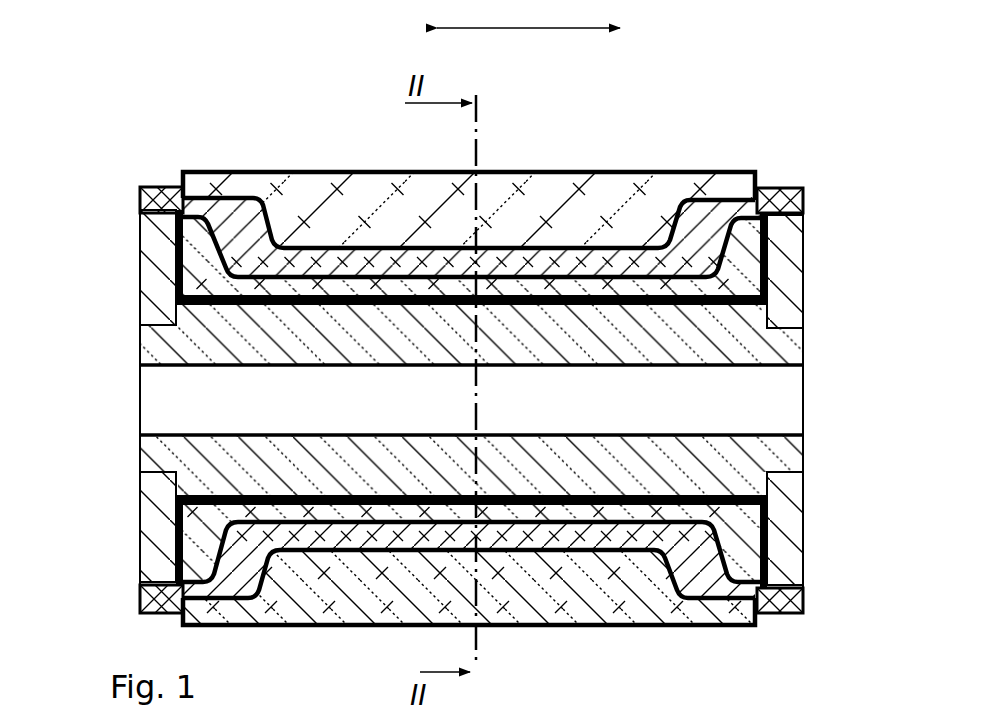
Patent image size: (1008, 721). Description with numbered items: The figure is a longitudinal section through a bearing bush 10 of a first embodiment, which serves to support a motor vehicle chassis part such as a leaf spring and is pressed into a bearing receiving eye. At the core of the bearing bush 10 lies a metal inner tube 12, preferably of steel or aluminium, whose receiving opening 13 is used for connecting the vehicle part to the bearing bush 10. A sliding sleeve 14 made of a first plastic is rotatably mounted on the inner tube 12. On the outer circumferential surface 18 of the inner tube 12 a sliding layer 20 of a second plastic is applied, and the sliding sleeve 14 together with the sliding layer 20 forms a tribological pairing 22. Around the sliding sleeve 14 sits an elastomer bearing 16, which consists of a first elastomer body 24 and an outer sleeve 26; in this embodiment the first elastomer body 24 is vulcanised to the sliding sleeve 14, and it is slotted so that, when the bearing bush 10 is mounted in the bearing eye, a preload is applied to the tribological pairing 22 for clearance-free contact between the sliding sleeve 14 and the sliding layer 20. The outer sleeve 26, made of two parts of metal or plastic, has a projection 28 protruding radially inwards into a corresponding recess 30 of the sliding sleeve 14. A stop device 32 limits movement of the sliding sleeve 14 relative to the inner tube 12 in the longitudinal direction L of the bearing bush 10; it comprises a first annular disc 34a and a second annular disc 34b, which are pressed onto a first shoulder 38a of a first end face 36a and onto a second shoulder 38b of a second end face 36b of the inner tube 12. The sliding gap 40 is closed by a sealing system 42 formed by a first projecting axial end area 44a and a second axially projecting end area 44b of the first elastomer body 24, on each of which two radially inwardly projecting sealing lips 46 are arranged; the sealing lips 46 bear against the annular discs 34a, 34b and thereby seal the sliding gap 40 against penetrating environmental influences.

The longitudinal direction L is at (578, 28).
The bearing bush 10 is at (683, 146).
The inner tube 12 is at (160, 340).
The receiving opening 13 is at (155, 396).
The sliding sleeve 14 is at (170, 265).
The elastomer bearing 16 is at (170, 166).
The outer circumferential surface 18 is at (158, 526).
The sliding layer 20 is at (152, 451).
The tribological pairing 22 is at (165, 302).
The first elastomer body 24 is at (224, 196).
The outer sleeve 26 is at (314, 188).
The projection 28 is at (545, 225).
The recess 30 is at (724, 176).
The stop device 32 is at (818, 212).
The first annular disc 34a is at (158, 242).
The second annular disc 34b is at (788, 260).
The first end face 36a is at (145, 470).
The second end face 36b is at (808, 470).
The first shoulder 38a is at (175, 500).
The second shoulder 38b is at (790, 483).
The sliding gap 40 is at (778, 515).
The sealing system 42 is at (825, 598).
The first projecting axial end area 44a is at (152, 608).
The second axially projecting end area 44b is at (780, 618).
The sealing lips 46 is at (150, 190).